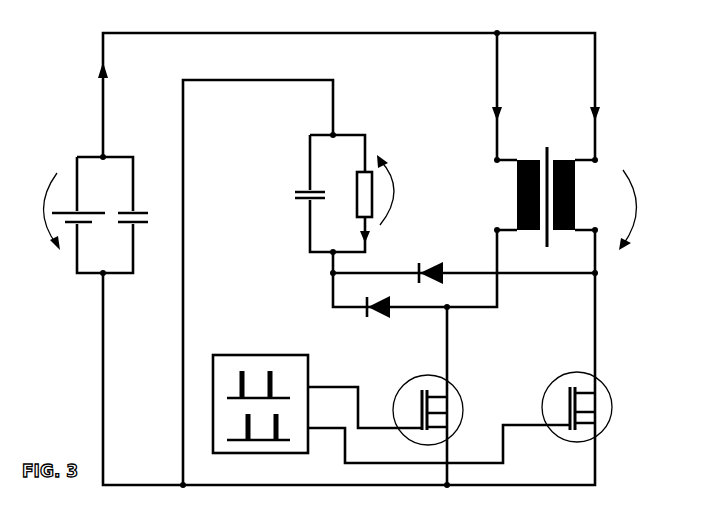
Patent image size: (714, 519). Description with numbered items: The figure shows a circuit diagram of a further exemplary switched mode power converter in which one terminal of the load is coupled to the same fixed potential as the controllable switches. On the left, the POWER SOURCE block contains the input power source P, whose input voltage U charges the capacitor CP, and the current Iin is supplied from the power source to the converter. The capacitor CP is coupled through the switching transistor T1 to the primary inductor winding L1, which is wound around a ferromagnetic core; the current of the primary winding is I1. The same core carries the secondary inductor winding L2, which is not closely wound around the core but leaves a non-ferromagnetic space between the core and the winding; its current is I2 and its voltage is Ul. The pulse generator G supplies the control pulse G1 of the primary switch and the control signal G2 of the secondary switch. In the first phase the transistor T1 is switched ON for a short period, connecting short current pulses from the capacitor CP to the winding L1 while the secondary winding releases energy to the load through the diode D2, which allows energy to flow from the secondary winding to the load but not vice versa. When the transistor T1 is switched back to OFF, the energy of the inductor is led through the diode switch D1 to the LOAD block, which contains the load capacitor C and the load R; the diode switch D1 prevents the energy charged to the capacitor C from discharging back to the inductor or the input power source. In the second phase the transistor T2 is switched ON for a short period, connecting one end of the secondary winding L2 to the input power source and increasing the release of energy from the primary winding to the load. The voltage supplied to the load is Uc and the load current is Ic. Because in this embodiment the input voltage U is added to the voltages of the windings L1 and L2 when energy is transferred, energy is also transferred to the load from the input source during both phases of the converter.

The input power source P is at (61, 194).
The input voltage U is at (37, 211).
The capacitor CP is at (118, 194).
The input current Iin is at (115, 73).
The power source POWER SOURCE is at (75, 238).
The load LOAD is at (307, 193).
The load capacitor C is at (286, 175).
The load R is at (347, 183).
The voltage supplied by primary winding Uc is at (397, 190).
The load current Ic is at (373, 240).
The diode switch D1 is at (392, 327).
The diode D2 is at (439, 246).
The primary inductor winding L1 is at (501, 195).
The secondary inductor winding L2 is at (583, 195).
The current of the primary winding I1 is at (506, 116).
The current of the secondary winding I2 is at (602, 116).
The voltage of the secondary winding Ul is at (624, 210).
The pulse generator G is at (260, 383).
The control pulse of the primary switch G1 is at (365, 398).
The control signal of the secondary switch G2 is at (439, 436).
The switching transistor T1 is at (455, 407).
The switching transistor T2 is at (563, 385).